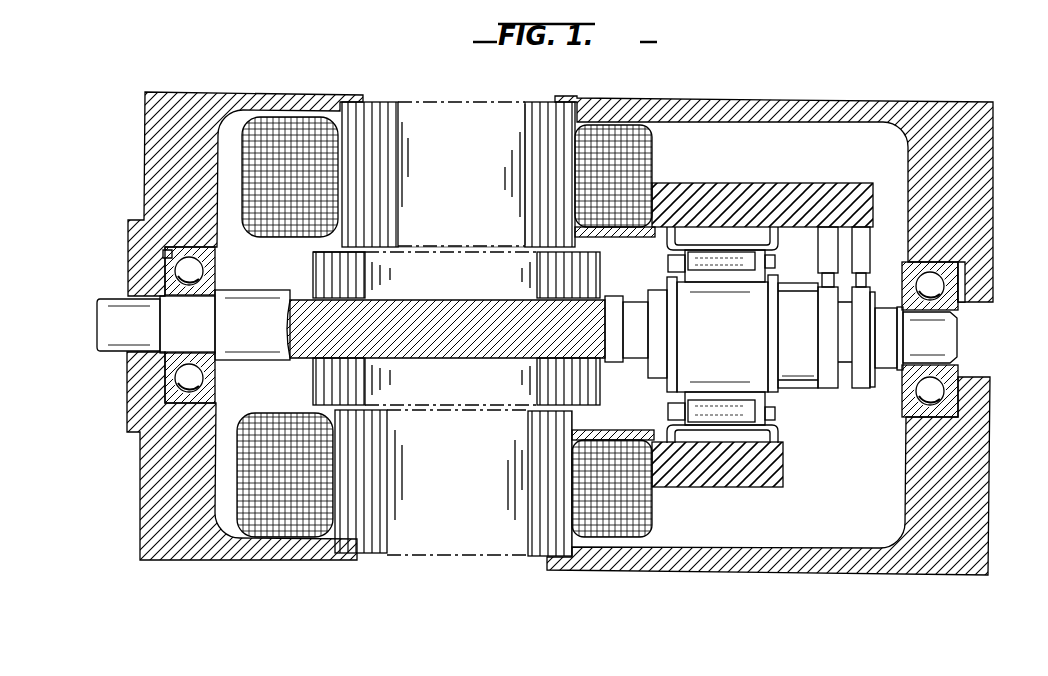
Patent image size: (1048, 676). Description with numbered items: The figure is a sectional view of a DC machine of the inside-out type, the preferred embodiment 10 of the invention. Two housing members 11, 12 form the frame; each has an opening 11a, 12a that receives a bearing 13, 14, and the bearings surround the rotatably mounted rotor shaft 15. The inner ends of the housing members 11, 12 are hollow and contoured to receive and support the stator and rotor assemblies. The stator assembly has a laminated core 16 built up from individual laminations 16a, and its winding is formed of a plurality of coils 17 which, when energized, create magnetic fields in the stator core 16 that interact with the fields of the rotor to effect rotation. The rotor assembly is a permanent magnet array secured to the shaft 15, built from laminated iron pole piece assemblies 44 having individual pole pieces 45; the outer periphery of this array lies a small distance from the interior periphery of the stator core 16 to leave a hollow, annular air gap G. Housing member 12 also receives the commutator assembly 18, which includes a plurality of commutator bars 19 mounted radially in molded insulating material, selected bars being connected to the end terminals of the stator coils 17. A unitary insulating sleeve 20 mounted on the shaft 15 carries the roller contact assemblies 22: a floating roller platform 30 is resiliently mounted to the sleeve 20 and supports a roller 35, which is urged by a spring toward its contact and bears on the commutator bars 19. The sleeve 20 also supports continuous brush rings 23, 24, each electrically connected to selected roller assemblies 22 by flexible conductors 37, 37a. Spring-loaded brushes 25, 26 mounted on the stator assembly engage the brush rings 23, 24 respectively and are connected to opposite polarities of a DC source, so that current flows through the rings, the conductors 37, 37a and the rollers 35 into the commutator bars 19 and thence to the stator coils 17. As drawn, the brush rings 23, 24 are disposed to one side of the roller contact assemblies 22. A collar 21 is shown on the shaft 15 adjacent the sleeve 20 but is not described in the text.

The preferred embodiment 10 is at (784, 47).
The housing member 11 is at (232, 93).
The opening 11a is at (167, 256).
The housing member 12 is at (879, 101).
The opening 12a is at (966, 273).
The bearing 13 is at (173, 273).
The bearing 14 is at (960, 291).
The rotor shaft 15 is at (958, 340).
The laminated core 16 is at (430, 99).
The laminations 16a is at (534, 101).
The coils 17 is at (655, 151).
The commutator assembly 18 is at (751, 353).
The commutator bars 19 is at (787, 436).
The unitary insulating sleeve 20 is at (788, 183).
The shaft collar 21 is at (654, 376).
The roller contact assemblies 22 is at (666, 262).
The brush ring 23 is at (829, 390).
The brush ring 24 is at (862, 390).
The brush 25 is at (814, 300).
The brush 26 is at (858, 277).
The floating roller platform 30 is at (727, 273).
The roller 35 is at (711, 266).
The flexible conductor 37 is at (818, 292).
The flexible conductor 37a is at (806, 382).
The laminated iron pole piece assemblies 44 is at (311, 373).
The pole pieces 45 is at (322, 251).
The air gap G is at (490, 268).